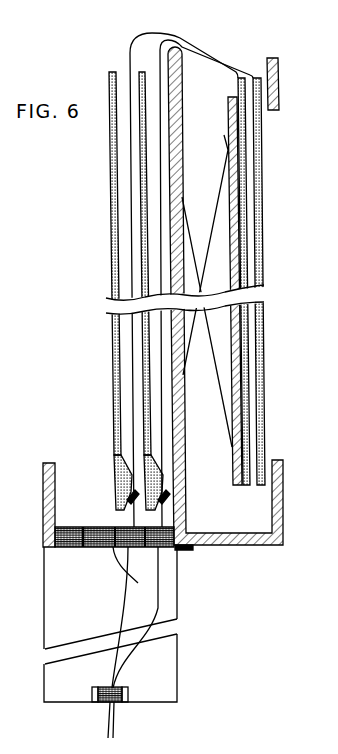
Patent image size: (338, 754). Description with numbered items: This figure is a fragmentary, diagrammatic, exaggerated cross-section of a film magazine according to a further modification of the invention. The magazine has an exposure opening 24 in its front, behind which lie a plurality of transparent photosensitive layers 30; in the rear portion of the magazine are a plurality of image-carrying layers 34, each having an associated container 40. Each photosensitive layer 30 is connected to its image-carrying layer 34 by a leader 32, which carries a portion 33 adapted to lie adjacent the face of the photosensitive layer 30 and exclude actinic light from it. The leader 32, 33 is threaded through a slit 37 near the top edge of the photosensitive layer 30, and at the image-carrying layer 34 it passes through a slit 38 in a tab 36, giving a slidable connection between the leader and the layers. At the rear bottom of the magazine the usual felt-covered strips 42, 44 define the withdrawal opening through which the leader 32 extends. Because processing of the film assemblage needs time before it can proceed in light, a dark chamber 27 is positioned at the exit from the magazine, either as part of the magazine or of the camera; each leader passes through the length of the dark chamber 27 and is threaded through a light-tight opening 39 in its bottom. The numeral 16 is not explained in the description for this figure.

The base 16 is at (243, 553).
The exposure opening 24 is at (275, 443).
The dark chamber 27 is at (177, 630).
The transparent photosensitive layers 30 is at (258, 218).
The leader 32 is at (208, 54).
The portion of the leader 33 is at (253, 237).
The image-carrying layers 34 is at (143, 191).
The tab 36 is at (165, 499).
The slit 37 is at (279, 83).
The slit 38 is at (160, 505).
The light-tight opening 39 is at (119, 709).
The containers 40 is at (158, 447).
The felt-covered strip 42 is at (85, 547).
The felt-covered strip 44 is at (150, 548).